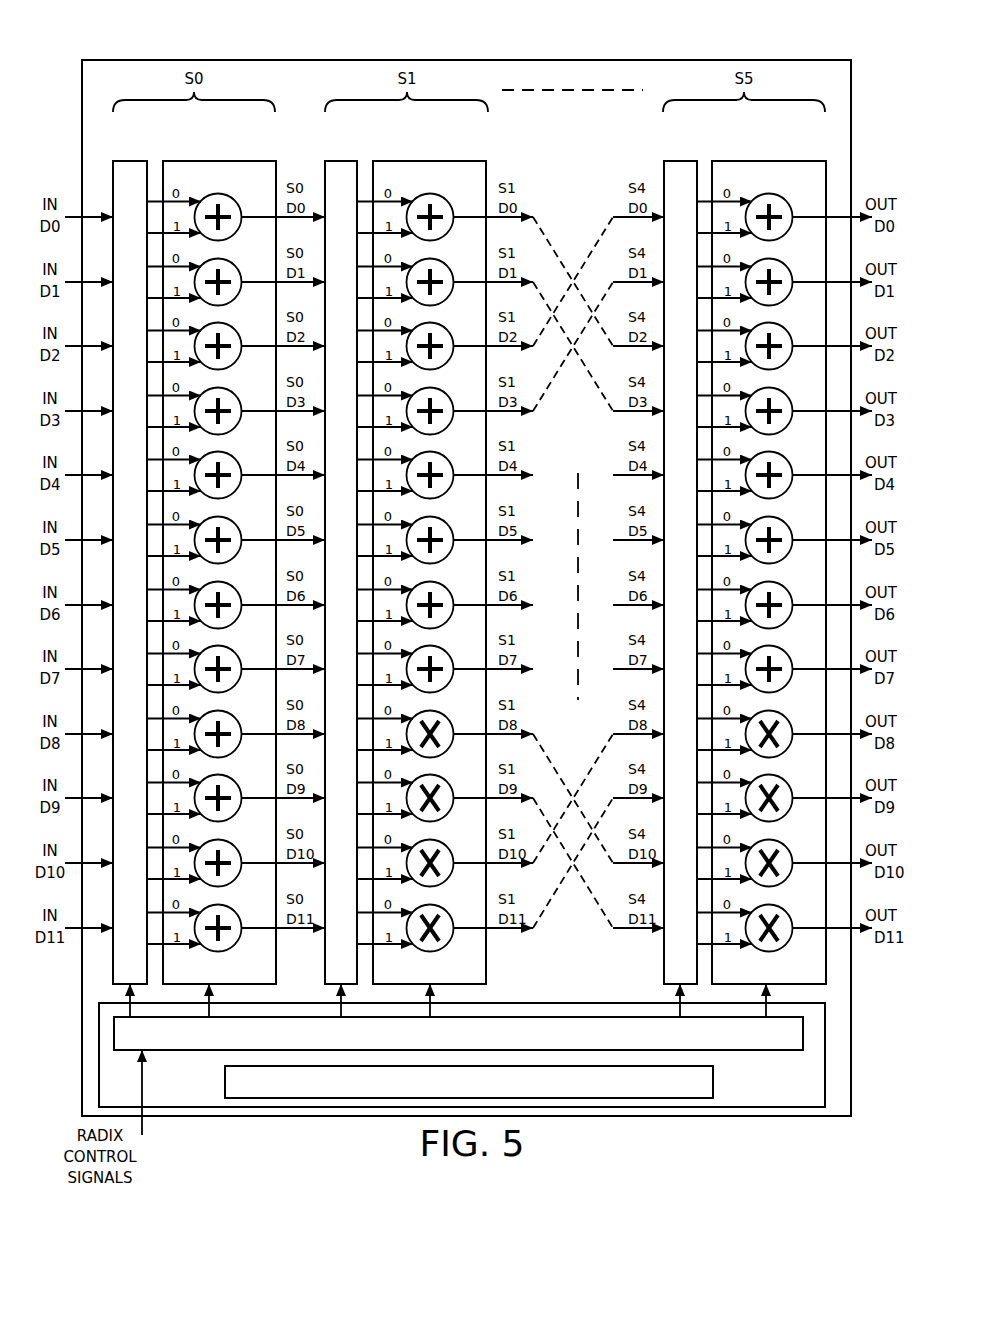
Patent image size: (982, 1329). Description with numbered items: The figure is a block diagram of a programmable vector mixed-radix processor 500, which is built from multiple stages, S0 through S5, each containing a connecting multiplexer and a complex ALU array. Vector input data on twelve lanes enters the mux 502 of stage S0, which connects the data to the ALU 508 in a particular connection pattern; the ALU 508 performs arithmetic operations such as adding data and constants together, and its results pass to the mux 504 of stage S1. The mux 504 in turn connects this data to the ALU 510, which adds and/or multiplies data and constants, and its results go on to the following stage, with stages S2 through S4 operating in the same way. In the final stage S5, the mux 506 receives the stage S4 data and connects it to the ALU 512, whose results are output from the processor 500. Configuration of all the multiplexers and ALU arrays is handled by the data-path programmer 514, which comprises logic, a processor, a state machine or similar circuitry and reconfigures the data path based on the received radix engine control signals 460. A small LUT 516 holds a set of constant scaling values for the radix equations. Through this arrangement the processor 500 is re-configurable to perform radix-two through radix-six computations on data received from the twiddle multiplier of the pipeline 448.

The programmable vector mixed-radix processor 500 is at (765, 60).
The mux 502 is at (139, 161).
The mux 504 is at (347, 161).
The mux 506 is at (673, 161).
The ALU 508 is at (235, 161).
The ALU 510 is at (443, 161).
The ALU 512 is at (778, 161).
The pipeline 448 is at (825, 1027).
The data-path programmer 514 is at (458, 1017).
The LUT 516 is at (469, 1082).
The radix engine control signals 460 is at (142, 1123).